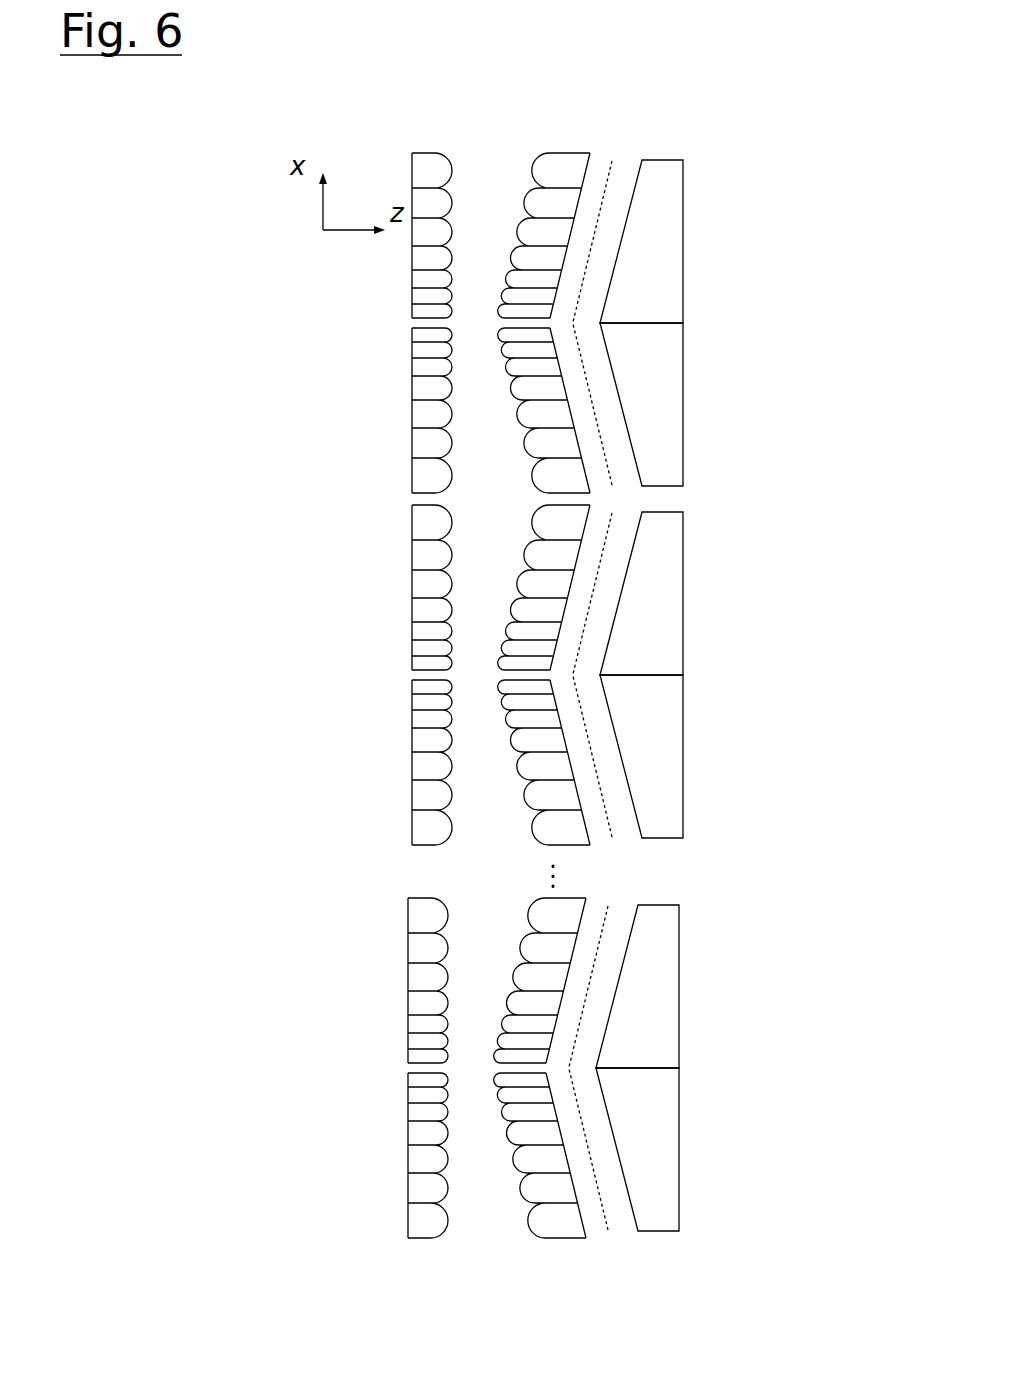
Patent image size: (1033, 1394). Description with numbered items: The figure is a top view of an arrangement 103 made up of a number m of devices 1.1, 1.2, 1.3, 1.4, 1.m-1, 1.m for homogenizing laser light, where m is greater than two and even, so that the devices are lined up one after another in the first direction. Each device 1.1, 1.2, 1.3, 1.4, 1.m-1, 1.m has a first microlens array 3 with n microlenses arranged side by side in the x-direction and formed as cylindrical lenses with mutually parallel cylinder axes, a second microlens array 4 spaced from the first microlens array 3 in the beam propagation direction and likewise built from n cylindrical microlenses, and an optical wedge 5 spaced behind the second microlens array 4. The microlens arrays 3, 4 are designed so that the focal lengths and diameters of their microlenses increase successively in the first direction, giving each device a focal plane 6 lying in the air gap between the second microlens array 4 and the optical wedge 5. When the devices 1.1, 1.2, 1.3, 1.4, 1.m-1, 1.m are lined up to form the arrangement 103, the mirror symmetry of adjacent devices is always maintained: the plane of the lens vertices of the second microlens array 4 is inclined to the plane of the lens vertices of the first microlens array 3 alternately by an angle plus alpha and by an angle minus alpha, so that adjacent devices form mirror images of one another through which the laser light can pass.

The arrangement 103 is at (190, 485).
The device for homogenizing laser light 1.1 is at (385, 255).
The device for homogenizing laser light 1.2 is at (405, 428).
The device for homogenizing laser light 1.3 is at (385, 617).
The device for homogenizing laser light 1.4 is at (390, 800).
The device for homogenizing laser light 1.m-1 is at (390, 1002).
The device for homogenizing laser light 1.m is at (385, 1200).
The first microlens array 3 is at (413, 170).
The second microlens array 4 is at (590, 160).
The optical wedge 5 is at (660, 360).
The focal plane 6 is at (603, 200).